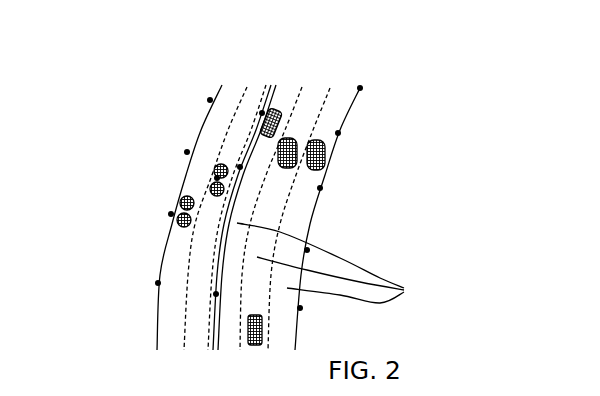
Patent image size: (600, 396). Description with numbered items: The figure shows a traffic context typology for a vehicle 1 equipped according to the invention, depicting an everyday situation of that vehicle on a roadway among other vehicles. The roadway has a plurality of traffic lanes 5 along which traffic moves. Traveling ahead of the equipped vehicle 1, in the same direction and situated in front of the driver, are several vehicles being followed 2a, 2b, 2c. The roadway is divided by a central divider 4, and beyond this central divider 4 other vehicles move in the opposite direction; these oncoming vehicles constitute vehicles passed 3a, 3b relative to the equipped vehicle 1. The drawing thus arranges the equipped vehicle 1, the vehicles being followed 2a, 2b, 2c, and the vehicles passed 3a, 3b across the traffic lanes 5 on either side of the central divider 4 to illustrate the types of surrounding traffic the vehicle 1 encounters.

The vehicle 1 is at (263, 328).
The vehicle being followed 2a is at (327, 160).
The vehicle being followed 2b is at (283, 168).
The vehicle being followed 2c is at (276, 108).
The vehicle passed 3a is at (170, 212).
The vehicle passed 3b is at (210, 173).
The central divider 4 is at (212, 280).
The traffic lanes 5 is at (398, 284).